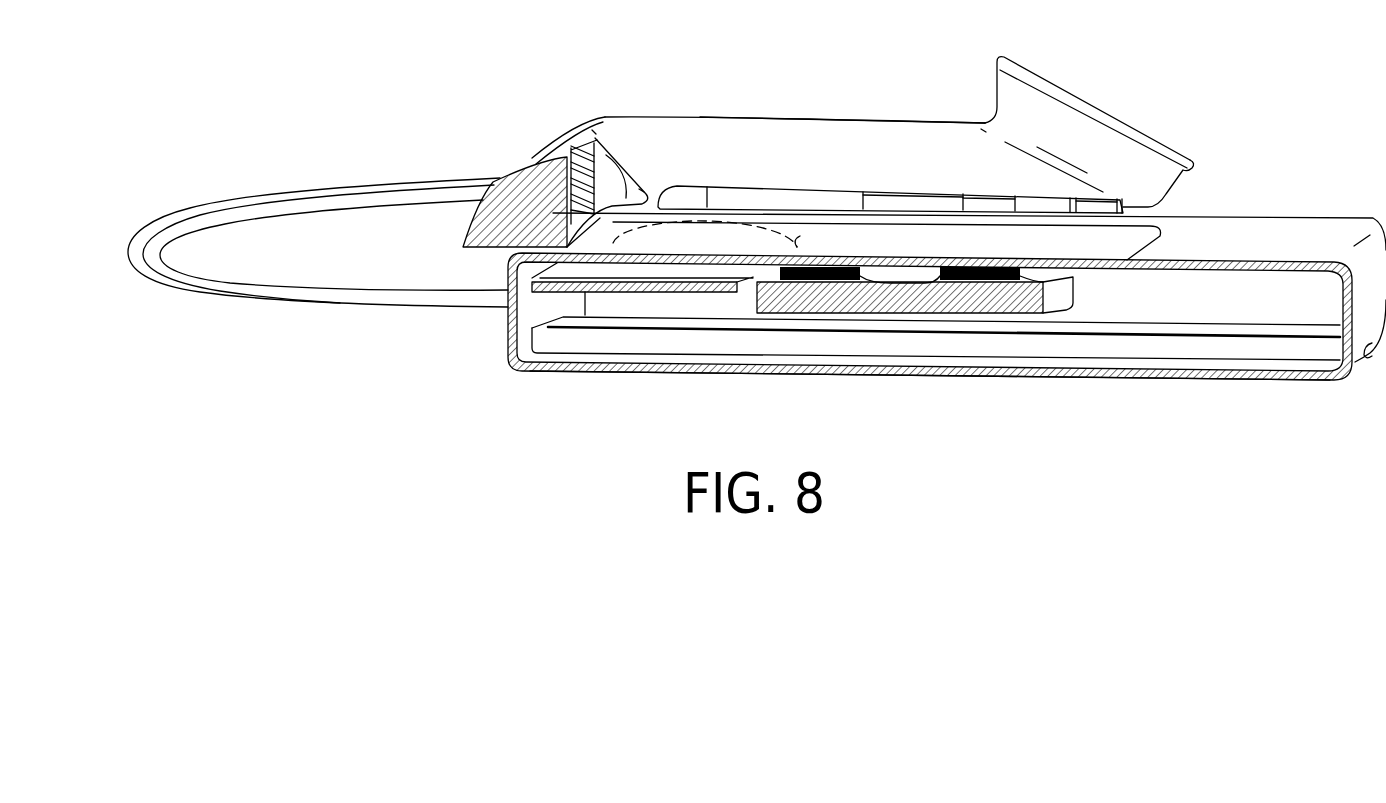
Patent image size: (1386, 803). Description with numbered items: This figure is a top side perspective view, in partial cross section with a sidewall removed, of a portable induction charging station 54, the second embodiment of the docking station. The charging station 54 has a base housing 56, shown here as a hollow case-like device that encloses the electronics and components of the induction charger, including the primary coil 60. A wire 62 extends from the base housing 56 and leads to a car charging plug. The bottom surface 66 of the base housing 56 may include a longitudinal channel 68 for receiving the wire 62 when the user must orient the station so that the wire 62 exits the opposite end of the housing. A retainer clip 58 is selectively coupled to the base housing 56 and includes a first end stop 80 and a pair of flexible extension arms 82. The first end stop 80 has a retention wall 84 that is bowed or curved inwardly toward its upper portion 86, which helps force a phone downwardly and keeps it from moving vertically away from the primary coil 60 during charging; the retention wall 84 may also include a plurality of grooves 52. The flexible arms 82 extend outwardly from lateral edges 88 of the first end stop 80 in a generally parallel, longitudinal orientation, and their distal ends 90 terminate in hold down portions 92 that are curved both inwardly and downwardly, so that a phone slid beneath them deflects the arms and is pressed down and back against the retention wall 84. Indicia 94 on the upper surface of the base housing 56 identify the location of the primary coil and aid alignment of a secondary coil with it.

The grooves 52 is at (602, 158).
The portable induction charging station 54 is at (480, 90).
The base housing 56 is at (1256, 208).
The retainer clip 58 is at (715, 110).
The primary coil 60 is at (923, 279).
The wire 62 is at (326, 182).
The bottom surface 66 is at (933, 373).
The longitudinal channel 68 is at (1217, 352).
The first end stop 80 is at (507, 158).
The flexible extension arms 82 is at (857, 132).
The retention wall 84 is at (588, 228).
The upper portion 86 is at (600, 149).
The lateral edges 88 is at (603, 117).
The distal ends 90 is at (1192, 167).
The hold down portions 92 is at (1070, 125).
The indicia 94 is at (800, 246).